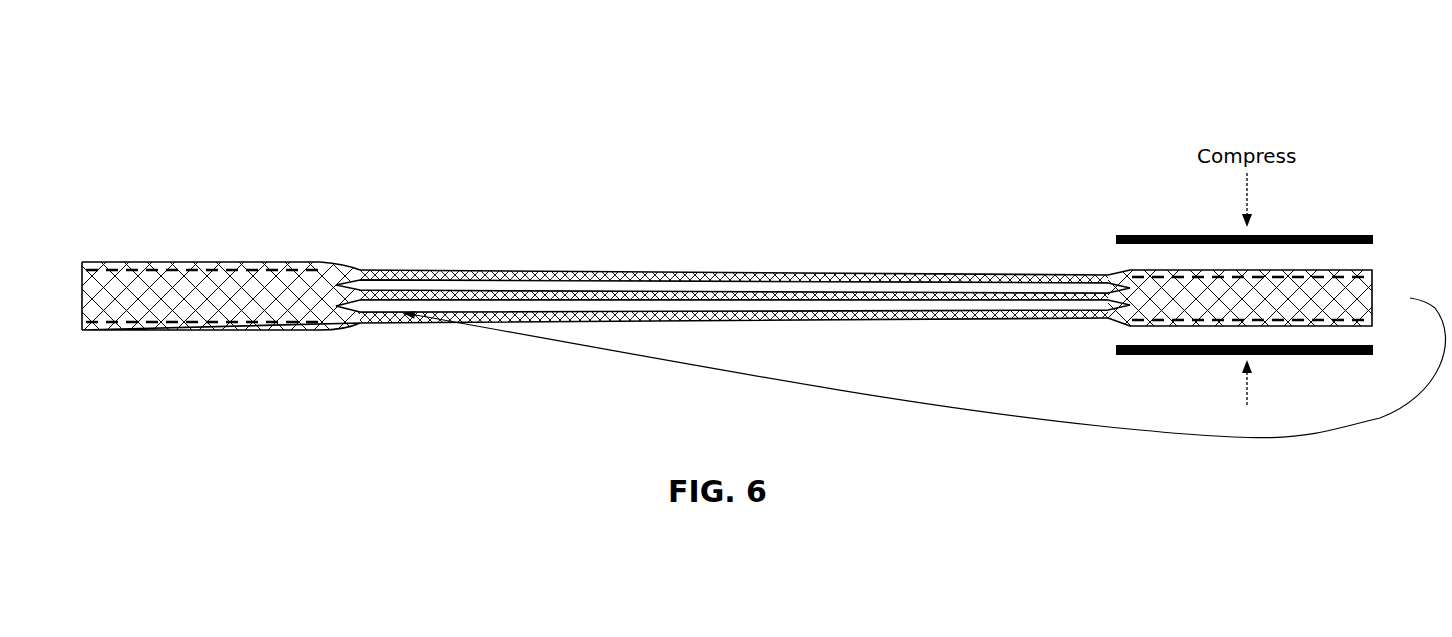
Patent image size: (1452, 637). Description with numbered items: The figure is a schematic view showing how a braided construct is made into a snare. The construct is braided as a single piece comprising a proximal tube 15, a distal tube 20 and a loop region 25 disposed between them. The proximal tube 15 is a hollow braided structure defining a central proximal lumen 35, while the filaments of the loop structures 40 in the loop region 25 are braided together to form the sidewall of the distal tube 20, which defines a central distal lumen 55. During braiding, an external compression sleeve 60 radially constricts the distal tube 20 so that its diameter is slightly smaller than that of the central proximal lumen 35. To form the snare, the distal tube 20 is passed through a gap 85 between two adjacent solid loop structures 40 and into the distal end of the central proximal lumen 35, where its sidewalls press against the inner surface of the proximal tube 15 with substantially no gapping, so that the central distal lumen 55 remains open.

The proximal tube 15 is at (173, 253).
The distal tube 20 is at (1196, 260).
The loop region 25 is at (726, 281).
The central proximal lumen 35 is at (218, 308).
The loop structures 40 is at (342, 258).
The central distal lumen 55 is at (1278, 305).
The external compression sleeve 60 is at (1156, 226).
The gap 85 is at (358, 323).